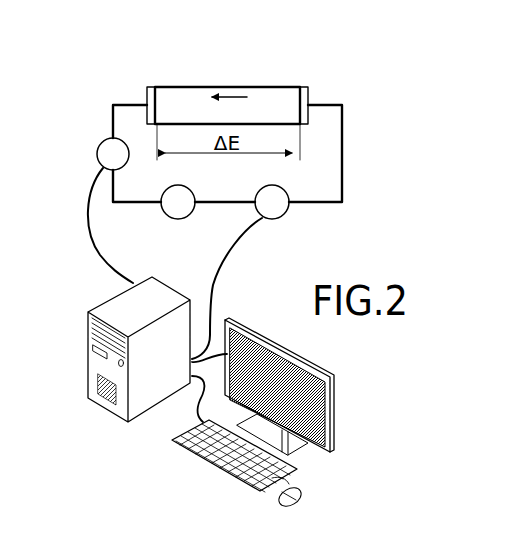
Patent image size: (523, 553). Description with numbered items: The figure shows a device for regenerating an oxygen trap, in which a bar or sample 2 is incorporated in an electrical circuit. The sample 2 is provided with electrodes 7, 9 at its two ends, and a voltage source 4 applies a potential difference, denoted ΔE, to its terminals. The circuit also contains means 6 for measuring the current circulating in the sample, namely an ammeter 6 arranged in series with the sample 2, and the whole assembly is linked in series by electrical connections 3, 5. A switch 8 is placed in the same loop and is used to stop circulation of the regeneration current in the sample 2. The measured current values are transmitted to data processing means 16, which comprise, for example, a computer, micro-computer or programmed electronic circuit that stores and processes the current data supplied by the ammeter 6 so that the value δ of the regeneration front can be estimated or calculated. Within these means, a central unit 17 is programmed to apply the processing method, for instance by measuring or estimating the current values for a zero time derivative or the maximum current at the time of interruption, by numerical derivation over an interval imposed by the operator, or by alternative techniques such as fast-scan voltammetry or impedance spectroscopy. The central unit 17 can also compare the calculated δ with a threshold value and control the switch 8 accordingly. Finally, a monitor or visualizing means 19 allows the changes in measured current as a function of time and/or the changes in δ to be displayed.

The sample 2 is at (250, 86).
The electrical connection 3 is at (336, 104).
The voltage source 4 is at (165, 214).
The electrical connection 5 is at (116, 104).
The ammeter 6 is at (97, 151).
The electrode 7 is at (306, 88).
The switch 8 is at (286, 210).
The electrode 9 is at (153, 88).
The data processing means 16 is at (150, 455).
The central unit 17 is at (87, 363).
The monitor 19 is at (333, 398).